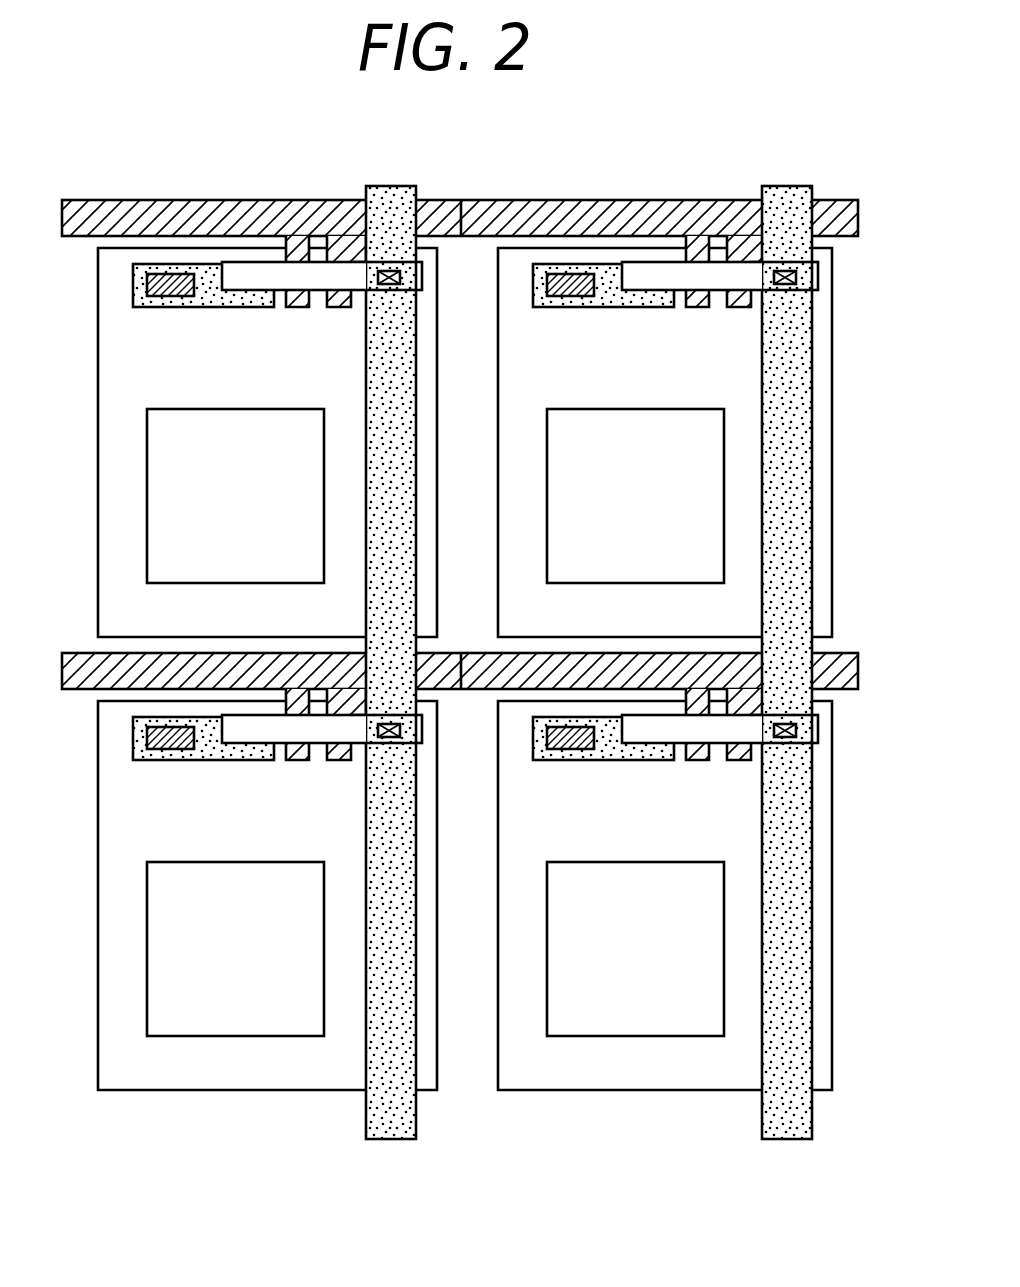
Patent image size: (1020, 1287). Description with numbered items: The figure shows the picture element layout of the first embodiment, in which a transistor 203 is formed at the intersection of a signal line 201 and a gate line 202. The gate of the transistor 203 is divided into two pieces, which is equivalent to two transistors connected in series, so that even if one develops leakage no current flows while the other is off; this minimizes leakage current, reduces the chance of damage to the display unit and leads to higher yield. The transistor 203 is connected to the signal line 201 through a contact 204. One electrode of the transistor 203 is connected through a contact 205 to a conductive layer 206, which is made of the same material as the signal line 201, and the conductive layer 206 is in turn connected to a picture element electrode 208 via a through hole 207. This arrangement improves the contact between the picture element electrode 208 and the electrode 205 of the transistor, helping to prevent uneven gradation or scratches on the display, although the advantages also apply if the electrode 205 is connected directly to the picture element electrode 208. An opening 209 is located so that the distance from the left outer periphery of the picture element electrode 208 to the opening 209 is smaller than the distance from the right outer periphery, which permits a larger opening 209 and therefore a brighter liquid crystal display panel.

The signal line 201 is at (796, 1114).
The gate line 202 is at (572, 199).
The transistor 203 is at (716, 284).
The contact 204 is at (798, 277).
The contact 205 is at (647, 292).
The conductive layer 206 is at (603, 307).
The through hole 207 is at (553, 296).
The picture element electrode 208 is at (500, 537).
The opening 209 is at (650, 583).